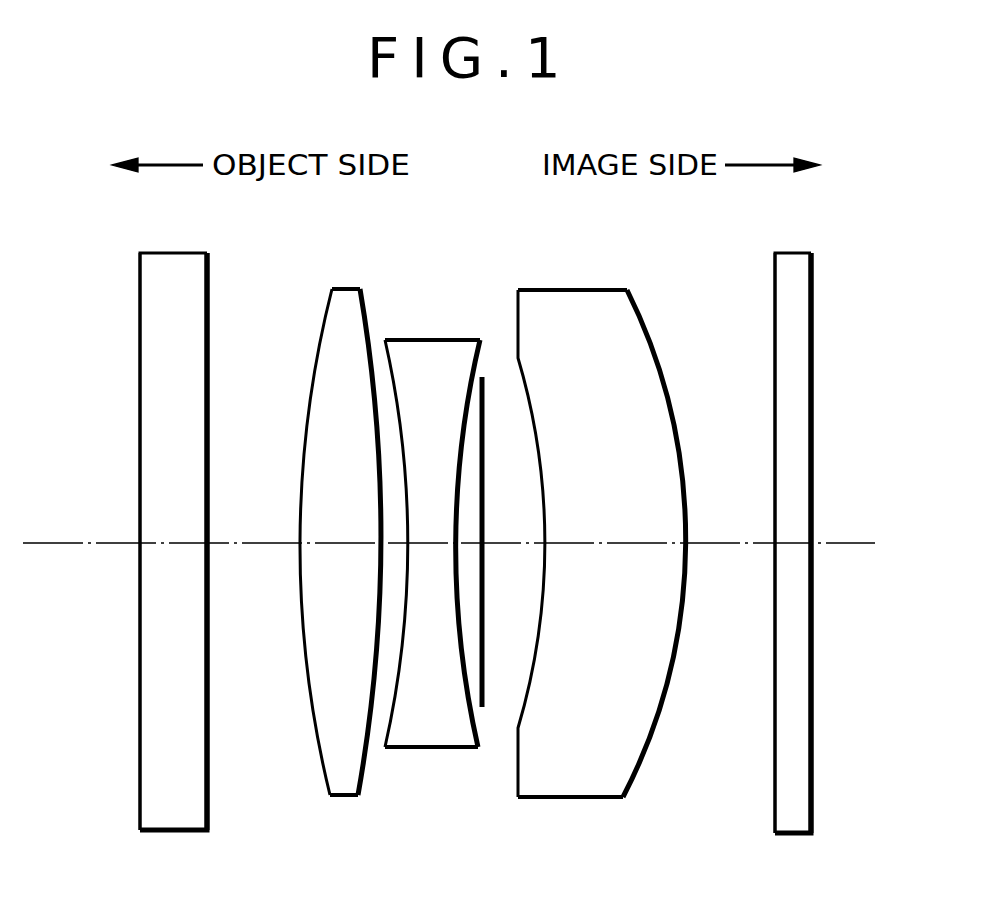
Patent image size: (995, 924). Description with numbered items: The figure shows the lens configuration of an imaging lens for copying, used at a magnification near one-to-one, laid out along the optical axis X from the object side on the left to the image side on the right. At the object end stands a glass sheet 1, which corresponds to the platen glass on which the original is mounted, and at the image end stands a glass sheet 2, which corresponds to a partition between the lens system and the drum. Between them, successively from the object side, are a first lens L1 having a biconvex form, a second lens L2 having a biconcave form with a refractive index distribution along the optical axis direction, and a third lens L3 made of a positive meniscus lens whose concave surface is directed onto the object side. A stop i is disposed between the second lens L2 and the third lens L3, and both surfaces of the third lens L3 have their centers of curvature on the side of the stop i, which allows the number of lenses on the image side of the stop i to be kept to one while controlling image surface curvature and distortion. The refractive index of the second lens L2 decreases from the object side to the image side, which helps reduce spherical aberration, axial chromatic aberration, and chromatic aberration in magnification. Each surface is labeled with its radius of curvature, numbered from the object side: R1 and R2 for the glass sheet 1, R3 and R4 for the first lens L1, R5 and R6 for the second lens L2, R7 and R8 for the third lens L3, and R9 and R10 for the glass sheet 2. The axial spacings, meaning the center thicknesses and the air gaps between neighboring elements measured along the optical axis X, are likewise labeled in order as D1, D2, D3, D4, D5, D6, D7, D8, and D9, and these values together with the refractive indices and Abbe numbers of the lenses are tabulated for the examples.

The glass sheet 1 is at (172, 253).
The glass sheet 2 is at (783, 253).
The first lens L1 is at (336, 542).
The second lens L2 is at (431, 544).
The third lens L3 is at (593, 541).
The stop i is at (484, 440).
The optical axis X is at (66, 546).
The axial spacing D1 is at (169, 525).
The axial spacing D2 is at (251, 525).
The axial spacing D3 is at (344, 525).
The axial spacing D4 is at (394, 540).
The axial spacing D5 is at (429, 525).
The axial spacing D6 is at (508, 525).
The axial spacing D7 is at (611, 525).
The axial spacing D8 is at (731, 525).
The axial spacing D9 is at (788, 543).
The radius of curvature R1 is at (140, 770).
The radius of curvature R2 is at (208, 797).
The radius of curvature R3 is at (318, 745).
The radius of curvature R4 is at (363, 772).
The radius of curvature R5 is at (390, 712).
The radius of curvature R6 is at (466, 660).
The radius of curvature R7 is at (520, 705).
The radius of curvature R8 is at (645, 756).
The radius of curvature R9 is at (775, 785).
The radius of curvature R10 is at (812, 782).